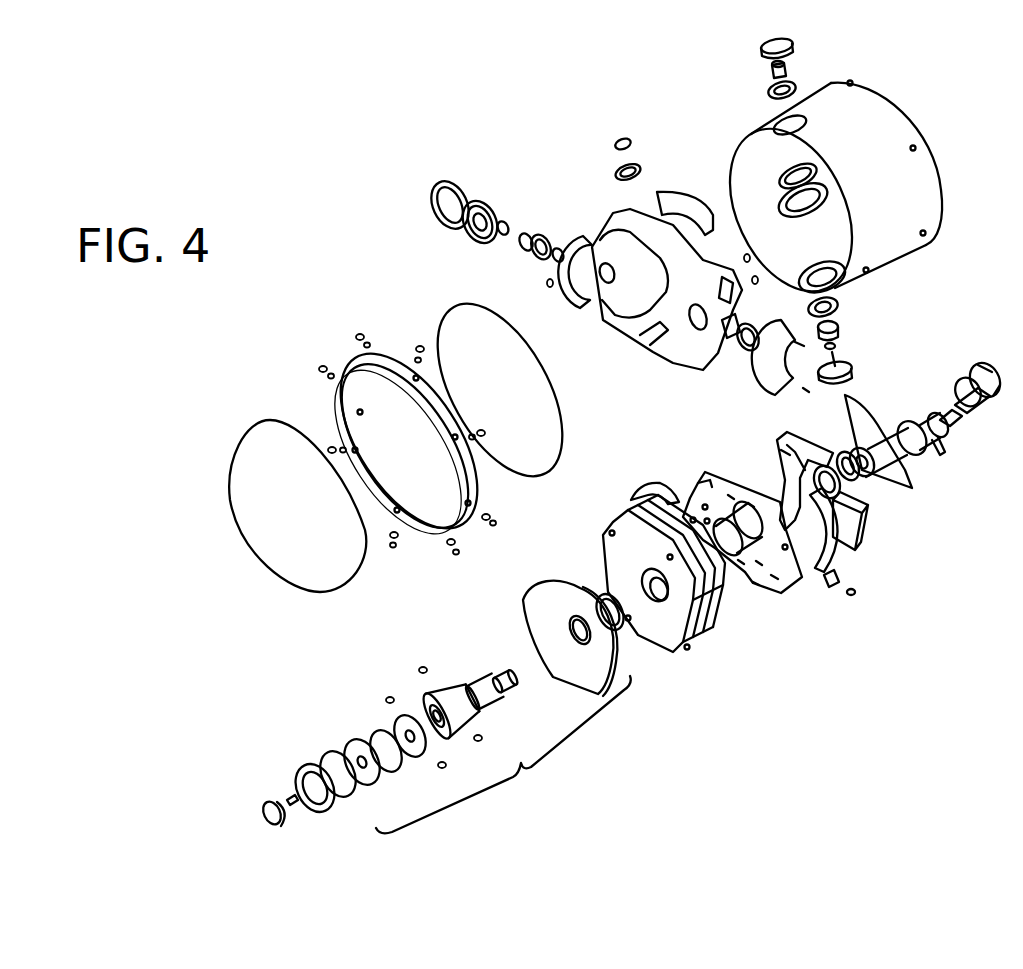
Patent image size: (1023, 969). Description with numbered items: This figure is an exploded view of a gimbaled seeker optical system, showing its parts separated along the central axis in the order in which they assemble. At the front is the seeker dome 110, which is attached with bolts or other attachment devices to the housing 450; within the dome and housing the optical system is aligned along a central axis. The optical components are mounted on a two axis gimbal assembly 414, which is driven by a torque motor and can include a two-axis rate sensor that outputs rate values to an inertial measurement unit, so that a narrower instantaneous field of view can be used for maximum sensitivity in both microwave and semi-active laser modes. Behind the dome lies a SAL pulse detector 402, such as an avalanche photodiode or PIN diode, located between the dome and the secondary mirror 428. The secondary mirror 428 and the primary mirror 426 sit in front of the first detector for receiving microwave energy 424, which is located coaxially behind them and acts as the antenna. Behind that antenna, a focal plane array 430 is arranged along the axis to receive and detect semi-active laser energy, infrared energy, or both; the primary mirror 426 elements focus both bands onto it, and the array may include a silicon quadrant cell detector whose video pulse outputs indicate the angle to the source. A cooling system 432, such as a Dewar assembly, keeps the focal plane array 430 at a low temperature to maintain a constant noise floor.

The seeker dome 110 is at (325, 590).
The two axis gimbal assembly 414 is at (577, 195).
The housing 450 is at (920, 167).
The first detector for receiving microwave energy 424 is at (671, 652).
The primary mirror 426 is at (566, 662).
The secondary mirror 428 is at (405, 762).
The SAL pulse detector 402 is at (275, 830).
The focal plane array 430 is at (913, 478).
The cooling system 432 is at (872, 470).